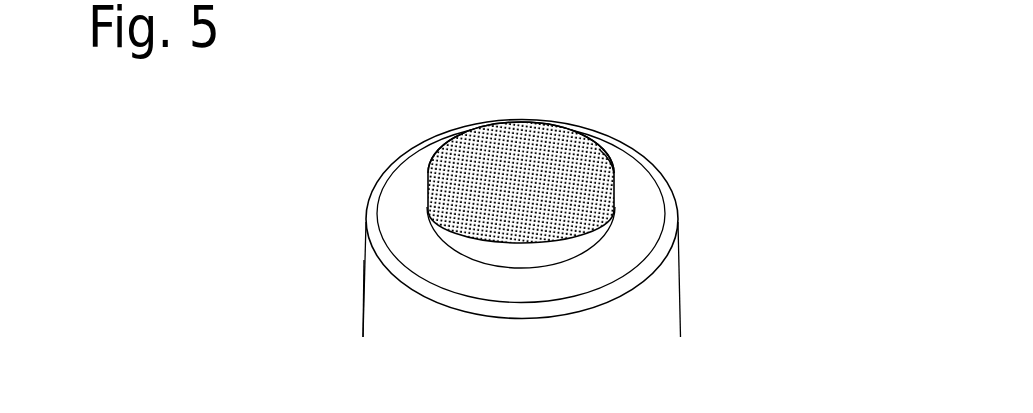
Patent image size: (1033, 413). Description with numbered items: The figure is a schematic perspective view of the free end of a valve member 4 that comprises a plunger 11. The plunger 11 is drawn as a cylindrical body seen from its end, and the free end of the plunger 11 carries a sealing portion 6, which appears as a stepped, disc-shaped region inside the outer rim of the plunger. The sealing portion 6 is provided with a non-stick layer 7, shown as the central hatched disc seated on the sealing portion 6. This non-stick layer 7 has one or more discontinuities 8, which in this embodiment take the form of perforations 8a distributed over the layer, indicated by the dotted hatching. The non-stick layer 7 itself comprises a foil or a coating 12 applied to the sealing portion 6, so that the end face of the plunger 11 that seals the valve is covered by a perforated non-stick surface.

The valve member 4 is at (662, 282).
The sealing portion 6 is at (440, 227).
The non-stick layer 7 is at (568, 178).
The discontinuities 8 is at (532, 157).
The perforations 8a is at (521, 147).
The plunger 11 is at (633, 312).
The foil or coating 12 is at (425, 175).